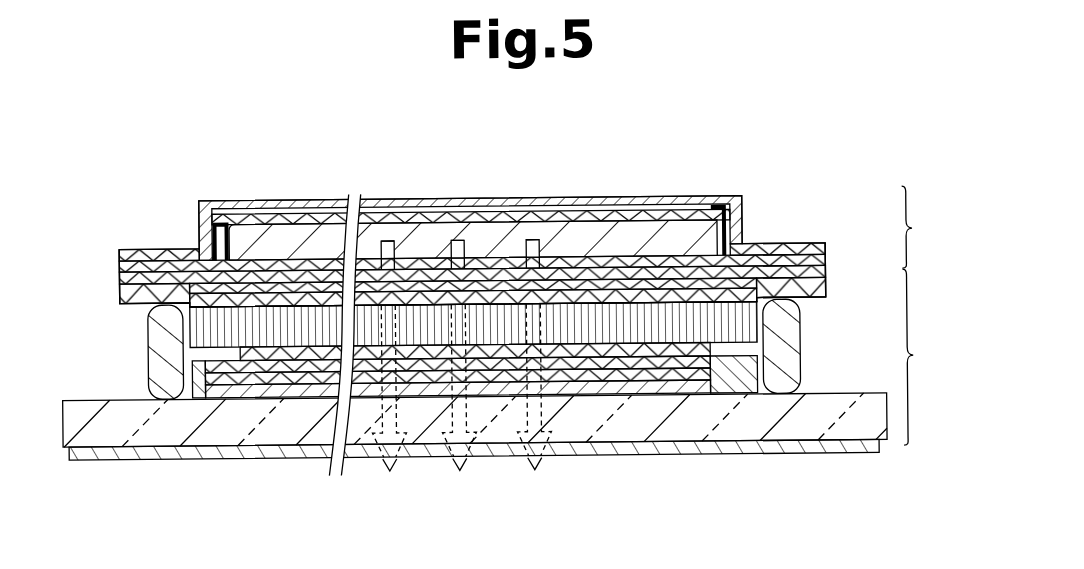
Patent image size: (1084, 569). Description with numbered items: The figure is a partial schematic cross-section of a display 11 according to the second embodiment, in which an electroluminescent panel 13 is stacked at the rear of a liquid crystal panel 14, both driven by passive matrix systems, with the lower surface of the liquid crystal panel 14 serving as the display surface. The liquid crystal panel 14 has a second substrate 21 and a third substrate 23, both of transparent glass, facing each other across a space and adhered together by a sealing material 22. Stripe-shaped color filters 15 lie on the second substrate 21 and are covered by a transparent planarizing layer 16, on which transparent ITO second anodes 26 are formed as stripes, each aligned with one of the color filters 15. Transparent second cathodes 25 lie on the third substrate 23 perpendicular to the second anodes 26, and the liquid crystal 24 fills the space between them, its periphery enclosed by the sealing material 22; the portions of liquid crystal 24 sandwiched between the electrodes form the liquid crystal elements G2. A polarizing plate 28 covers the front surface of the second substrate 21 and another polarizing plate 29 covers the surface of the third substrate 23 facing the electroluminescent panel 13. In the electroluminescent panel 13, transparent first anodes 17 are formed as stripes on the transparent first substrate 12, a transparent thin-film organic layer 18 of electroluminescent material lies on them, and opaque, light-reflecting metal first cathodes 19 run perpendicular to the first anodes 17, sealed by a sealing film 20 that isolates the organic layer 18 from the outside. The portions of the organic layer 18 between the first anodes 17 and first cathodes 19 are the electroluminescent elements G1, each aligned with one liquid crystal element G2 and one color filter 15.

The display 11 is at (634, 140).
The first substrate 12 is at (828, 259).
The electroluminescent panel 13 is at (929, 227).
The liquid crystal panel 14 is at (930, 357).
The color filters 15 is at (273, 392).
The planarizing layer 16 is at (215, 383).
The first anodes 17 is at (277, 257).
The organic layer 18 is at (300, 249).
The first cathodes 19 is at (557, 199).
The sealing film 20 is at (449, 198).
The second substrate 21 is at (680, 425).
The sealing material 22 is at (157, 333).
The third substrate 23 is at (808, 295).
The liquid crystal 24 is at (200, 336).
The second cathodes 25 is at (207, 303).
The second anodes 26 is at (247, 364).
The polarizing plate 28 is at (805, 447).
The polarizing plate 29 is at (828, 277).
The electroluminescent elements G1 is at (615, 244).
The liquid crystal elements G2 is at (605, 329).